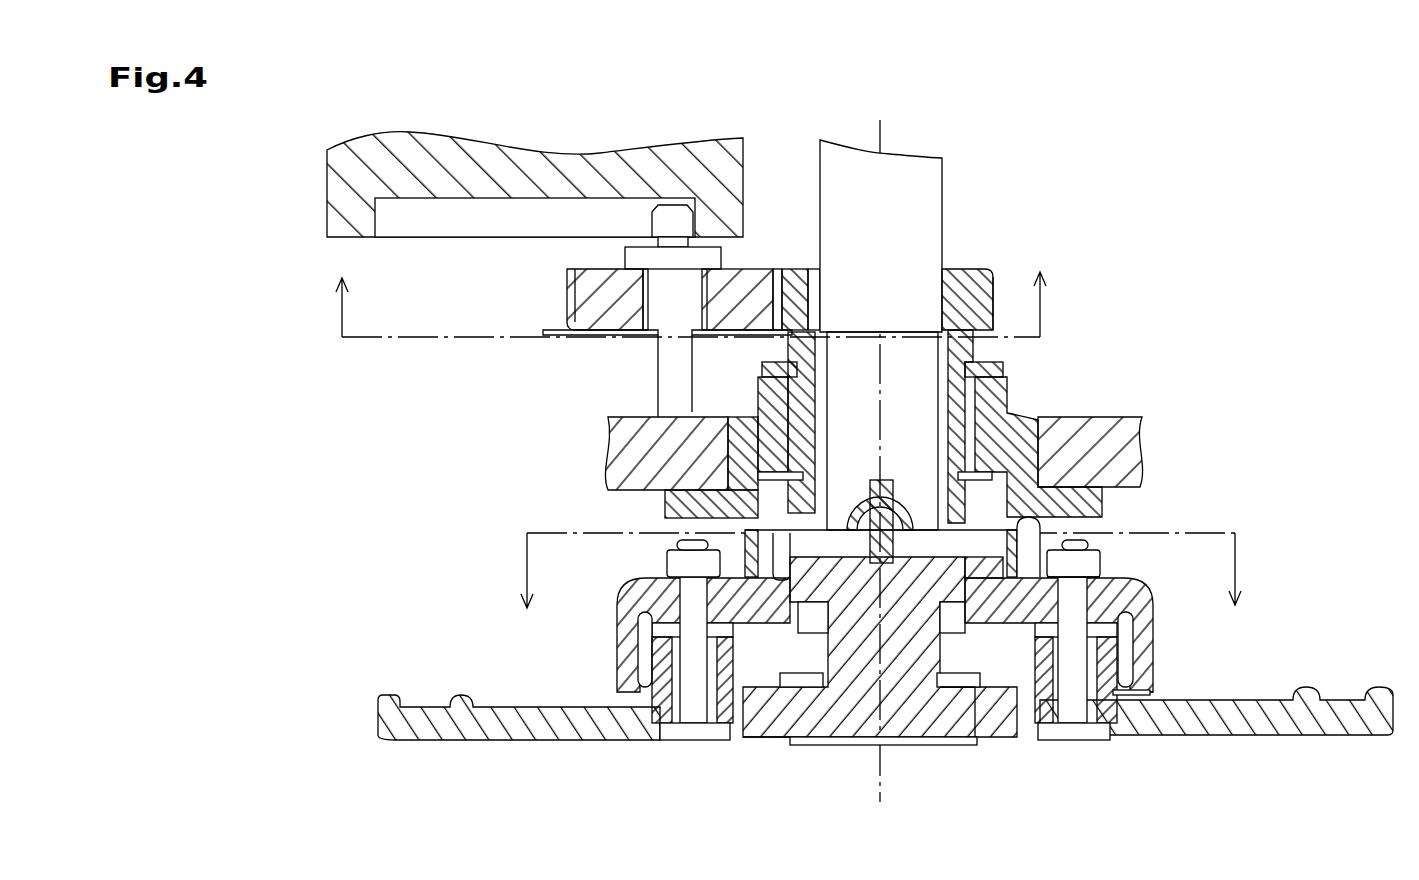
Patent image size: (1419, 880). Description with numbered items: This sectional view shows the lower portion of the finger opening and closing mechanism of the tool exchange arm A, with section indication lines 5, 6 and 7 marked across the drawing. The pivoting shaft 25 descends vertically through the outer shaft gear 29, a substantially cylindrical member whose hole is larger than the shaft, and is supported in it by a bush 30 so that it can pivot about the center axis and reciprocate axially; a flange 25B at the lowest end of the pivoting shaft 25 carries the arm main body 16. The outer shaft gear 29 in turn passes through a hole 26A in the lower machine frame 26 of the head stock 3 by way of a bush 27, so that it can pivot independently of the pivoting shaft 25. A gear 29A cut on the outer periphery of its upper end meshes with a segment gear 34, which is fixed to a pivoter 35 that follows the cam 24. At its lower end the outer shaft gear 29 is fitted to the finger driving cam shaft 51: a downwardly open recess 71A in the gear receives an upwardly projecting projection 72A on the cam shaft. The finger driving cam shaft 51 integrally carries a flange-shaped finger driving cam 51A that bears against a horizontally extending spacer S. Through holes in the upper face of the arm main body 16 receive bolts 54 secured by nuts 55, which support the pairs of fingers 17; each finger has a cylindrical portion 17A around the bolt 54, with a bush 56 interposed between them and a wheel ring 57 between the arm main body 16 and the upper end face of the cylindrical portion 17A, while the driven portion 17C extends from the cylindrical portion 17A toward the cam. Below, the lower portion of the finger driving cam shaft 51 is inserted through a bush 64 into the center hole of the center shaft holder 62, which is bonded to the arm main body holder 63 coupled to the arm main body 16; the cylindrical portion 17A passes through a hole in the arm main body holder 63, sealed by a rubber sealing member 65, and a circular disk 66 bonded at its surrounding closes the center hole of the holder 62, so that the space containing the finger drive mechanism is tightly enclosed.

The head stock 3 is at (608, 440).
The section line 5 is at (882, 467).
The section line 6 is at (881, 560).
The section line 7 is at (691, 322).
The tool exchange arm main body 16 is at (1150, 590).
The pairs of fingers 17 is at (437, 742).
The cylindrical portion 17A is at (1122, 640).
The driven portion 17C is at (770, 736).
The cam 24 is at (327, 206).
The pivoting shaft 25 is at (942, 185).
The flange 25B is at (760, 545).
The lower machine frame 26 is at (1010, 400).
The hole 26A is at (978, 445).
The bush 27 is at (762, 367).
The outer shaft gear 29 is at (965, 268).
The gear 29A is at (995, 280).
The bush 30 is at (815, 270).
The segment gear 34 is at (567, 302).
The pivoter 35 is at (652, 215).
The finger driving cam shaft 51 is at (903, 745).
The finger driving cam 51A is at (1000, 740).
The bolt 54 is at (1085, 592).
The nut 55 is at (1100, 562).
The bush 56 is at (668, 742).
The wheel ring 57 is at (617, 628).
The center shaft holder 62 is at (1013, 740).
The arm main body holder 63 is at (1150, 692).
The bush 64 is at (955, 740).
The sealing member 65 is at (1143, 662).
The circular disk 66 is at (855, 745).
The recess 71A is at (884, 470).
The projection 72A is at (889, 485).
The spacer S is at (806, 745).
The tool exchange arm A is at (772, 806).